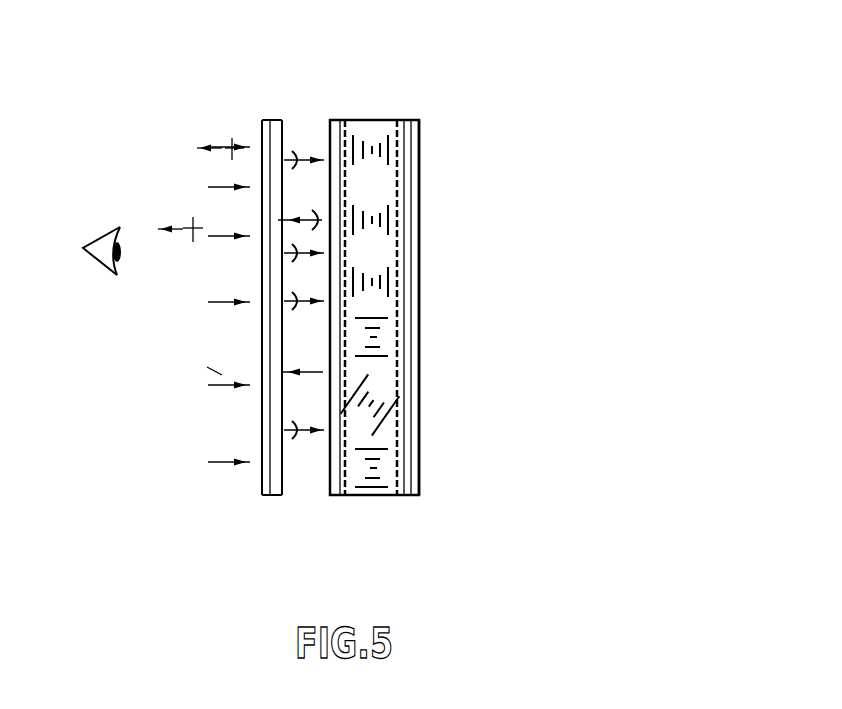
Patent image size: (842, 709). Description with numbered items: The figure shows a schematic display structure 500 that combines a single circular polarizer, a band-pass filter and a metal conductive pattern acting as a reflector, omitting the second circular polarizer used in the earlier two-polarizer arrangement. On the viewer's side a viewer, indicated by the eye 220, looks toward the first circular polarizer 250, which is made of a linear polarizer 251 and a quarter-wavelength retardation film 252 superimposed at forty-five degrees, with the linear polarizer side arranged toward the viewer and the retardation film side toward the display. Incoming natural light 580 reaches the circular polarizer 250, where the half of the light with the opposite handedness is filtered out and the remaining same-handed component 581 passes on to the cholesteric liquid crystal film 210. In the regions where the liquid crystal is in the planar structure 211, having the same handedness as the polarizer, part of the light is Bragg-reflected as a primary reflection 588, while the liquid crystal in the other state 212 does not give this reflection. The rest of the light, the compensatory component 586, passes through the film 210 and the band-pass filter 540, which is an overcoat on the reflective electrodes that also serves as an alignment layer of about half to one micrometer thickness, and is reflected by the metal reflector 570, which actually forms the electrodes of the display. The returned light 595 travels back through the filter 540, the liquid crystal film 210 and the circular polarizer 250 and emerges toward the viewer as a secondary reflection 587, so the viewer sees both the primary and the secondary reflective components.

The display structure 500 is at (254, 291).
The first circular polarizer 250 is at (268, 112).
The linear polarizer 251 is at (263, 508).
The quarter-wave retardation film 252 is at (280, 505).
The cholesteric liquid crystal film 210 is at (368, 120).
The planar structure liquid crystal 211 is at (370, 216).
The liquid crystal molecules (second orientation) 212 is at (358, 468).
The band-pass filter 540 is at (402, 495).
The metal reflector 570 is at (402, 120).
The viewer eye 220 is at (105, 275).
The incident light 580 is at (227, 308).
The polarized light 581 is at (303, 157).
The reflected light 586 is at (301, 208).
The reflected light exiting 587 is at (187, 220).
The reflected light exiting 588 is at (218, 140).
The returning light 595 is at (302, 363).